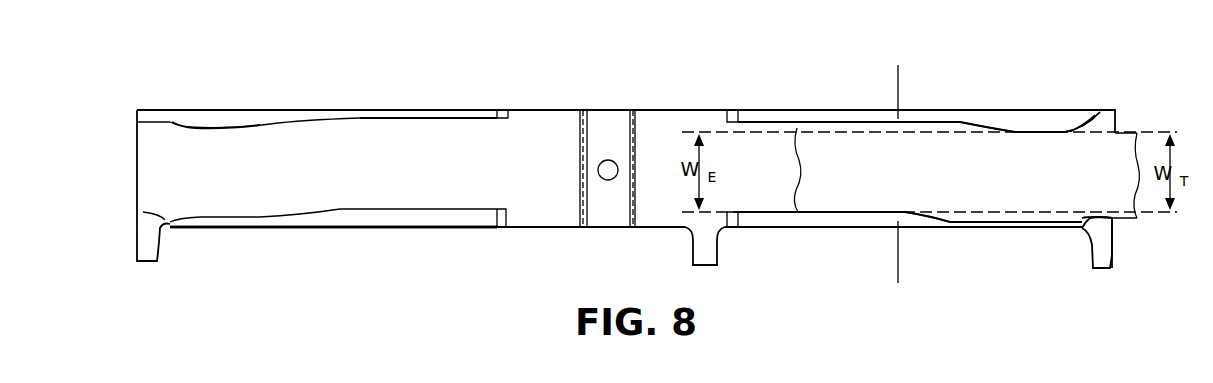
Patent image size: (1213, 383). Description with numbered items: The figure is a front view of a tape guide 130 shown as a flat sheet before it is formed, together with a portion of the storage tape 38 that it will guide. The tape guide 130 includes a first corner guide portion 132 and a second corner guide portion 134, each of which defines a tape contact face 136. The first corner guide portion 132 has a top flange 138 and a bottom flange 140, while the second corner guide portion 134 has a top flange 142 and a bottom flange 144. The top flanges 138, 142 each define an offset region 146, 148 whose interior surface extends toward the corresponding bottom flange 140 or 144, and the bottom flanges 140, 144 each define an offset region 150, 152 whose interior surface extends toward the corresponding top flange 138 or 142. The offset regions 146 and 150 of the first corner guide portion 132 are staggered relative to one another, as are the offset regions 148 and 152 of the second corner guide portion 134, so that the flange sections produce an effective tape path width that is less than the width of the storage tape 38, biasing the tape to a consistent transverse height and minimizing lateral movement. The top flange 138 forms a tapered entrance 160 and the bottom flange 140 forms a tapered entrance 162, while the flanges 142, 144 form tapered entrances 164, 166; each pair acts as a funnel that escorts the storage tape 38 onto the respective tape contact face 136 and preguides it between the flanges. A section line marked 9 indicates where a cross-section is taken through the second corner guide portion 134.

The tape guide 130 is at (576, 66).
The first corner guide portion 132 is at (355, 98).
The second corner guide portion 134 is at (947, 92).
The tape contact face 136 is at (247, 192).
The top flange 138 is at (425, 104).
The bottom flange 140 is at (319, 235).
The top flange 142 is at (777, 102).
The bottom flange 144 is at (933, 242).
The offset region 146 is at (205, 118).
The offset region 148 is at (1033, 126).
The offset region 150 is at (378, 220).
The offset region 152 is at (793, 222).
The tapered entrance 160 is at (137, 124).
The tapered entrance 162 is at (143, 212).
The tapered entrance 164 is at (1085, 125).
The tapered entrance 166 is at (1108, 230).
The storage tape 38 is at (1125, 143).
The section line 9- 9 is at (898, 65).